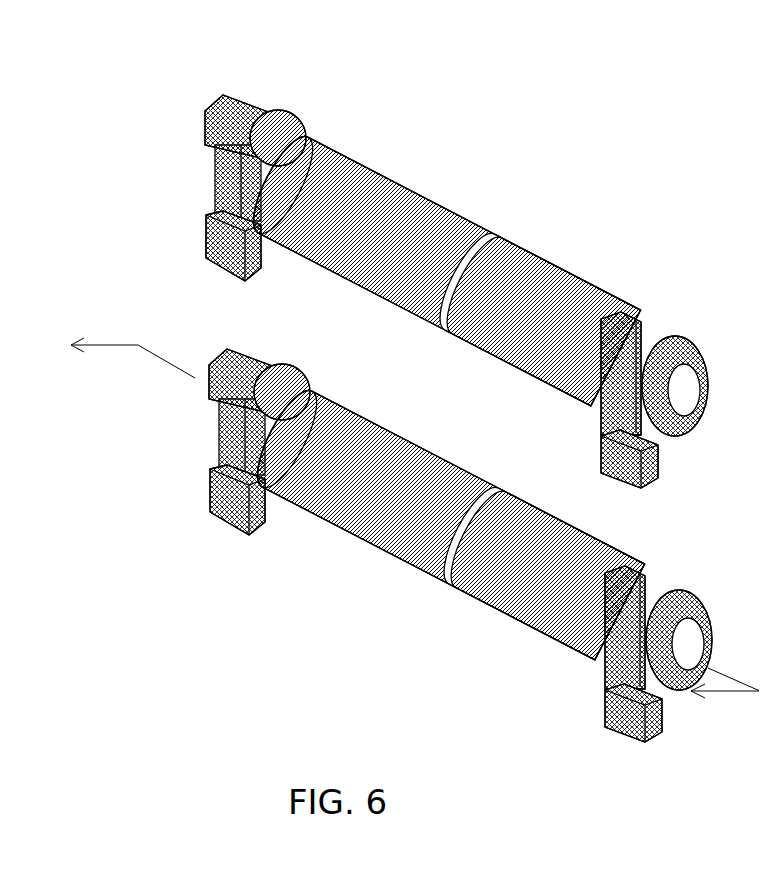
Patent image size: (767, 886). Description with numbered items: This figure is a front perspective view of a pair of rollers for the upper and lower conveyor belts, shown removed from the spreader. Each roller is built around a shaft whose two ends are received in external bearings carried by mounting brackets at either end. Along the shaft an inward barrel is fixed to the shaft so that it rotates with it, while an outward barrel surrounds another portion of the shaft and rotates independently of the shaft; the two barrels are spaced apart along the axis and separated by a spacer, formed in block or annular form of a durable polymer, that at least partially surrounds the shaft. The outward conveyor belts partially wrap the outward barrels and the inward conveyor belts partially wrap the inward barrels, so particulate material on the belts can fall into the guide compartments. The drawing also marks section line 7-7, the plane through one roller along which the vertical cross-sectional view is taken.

The section line 7 is at (408, 538).